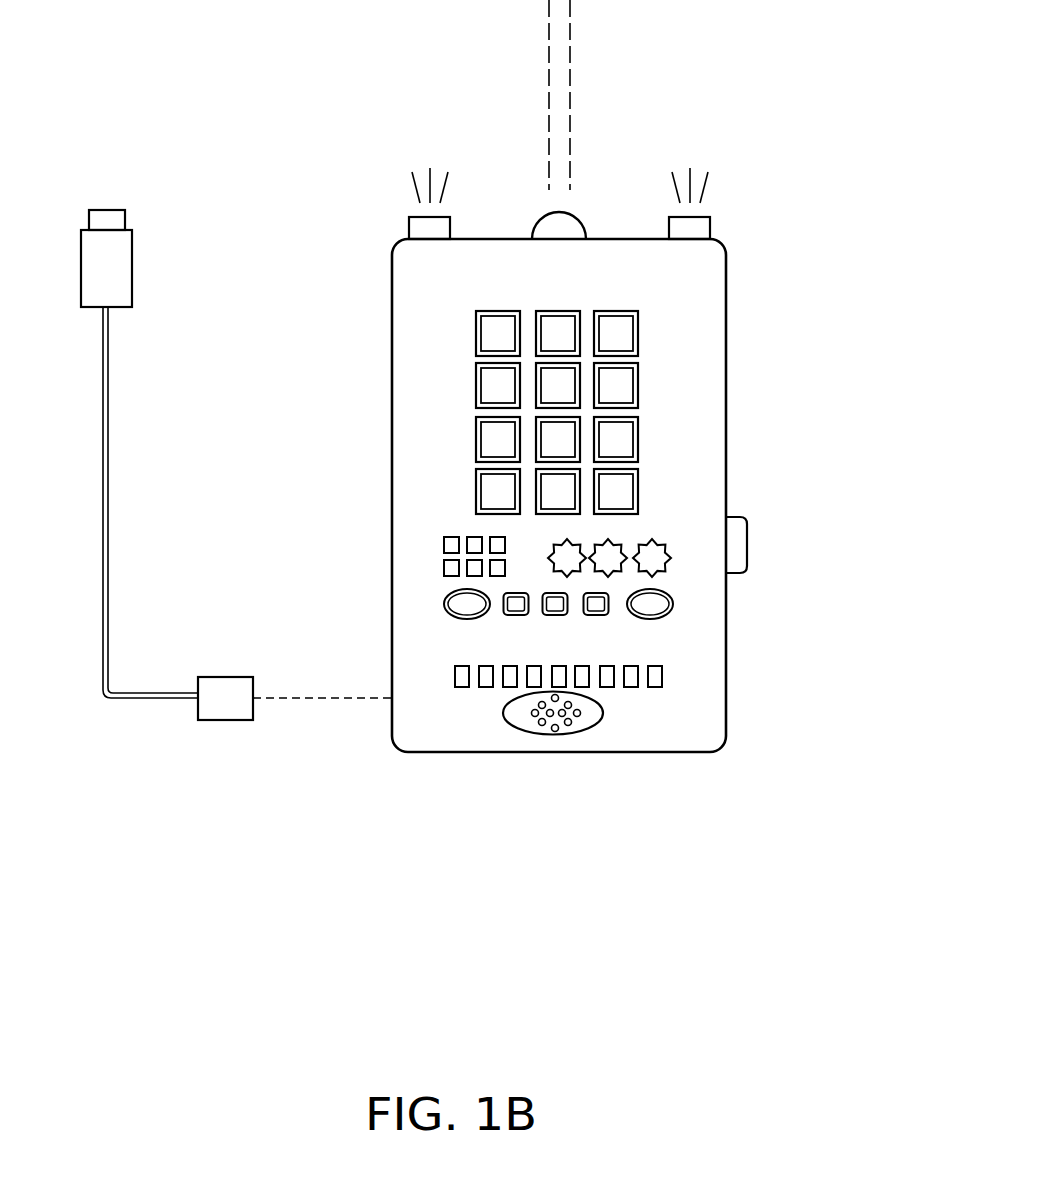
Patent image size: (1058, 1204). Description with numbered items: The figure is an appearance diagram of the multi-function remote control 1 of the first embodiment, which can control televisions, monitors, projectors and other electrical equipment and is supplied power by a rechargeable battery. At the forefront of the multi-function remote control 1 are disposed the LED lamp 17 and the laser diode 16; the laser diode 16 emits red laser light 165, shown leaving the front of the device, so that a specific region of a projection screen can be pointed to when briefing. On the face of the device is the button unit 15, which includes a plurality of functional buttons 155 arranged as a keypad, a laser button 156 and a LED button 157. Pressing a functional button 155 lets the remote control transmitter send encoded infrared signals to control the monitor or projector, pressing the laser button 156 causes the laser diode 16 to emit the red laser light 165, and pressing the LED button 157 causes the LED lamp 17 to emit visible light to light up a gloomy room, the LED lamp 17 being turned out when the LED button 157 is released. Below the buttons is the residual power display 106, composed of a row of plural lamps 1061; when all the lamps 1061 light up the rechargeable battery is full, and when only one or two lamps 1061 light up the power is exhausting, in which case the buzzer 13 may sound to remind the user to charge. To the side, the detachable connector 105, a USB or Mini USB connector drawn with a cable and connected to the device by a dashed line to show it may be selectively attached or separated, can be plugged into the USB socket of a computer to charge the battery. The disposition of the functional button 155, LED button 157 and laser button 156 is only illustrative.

The multi-function remote control 1 is at (812, 843).
The detachable connector 105 is at (110, 182).
The residual power display 106 is at (584, 772).
The lamp 1061 is at (605, 680).
The buzzer 13 is at (522, 718).
The button unit 15 is at (598, 465).
The functional button 155 is at (620, 385).
The laser button 156 is at (448, 545).
The LED button 157 is at (460, 605).
The laser diode 16 is at (570, 225).
The red laser light 165 is at (563, 45).
The LED lamp 17 is at (430, 228).